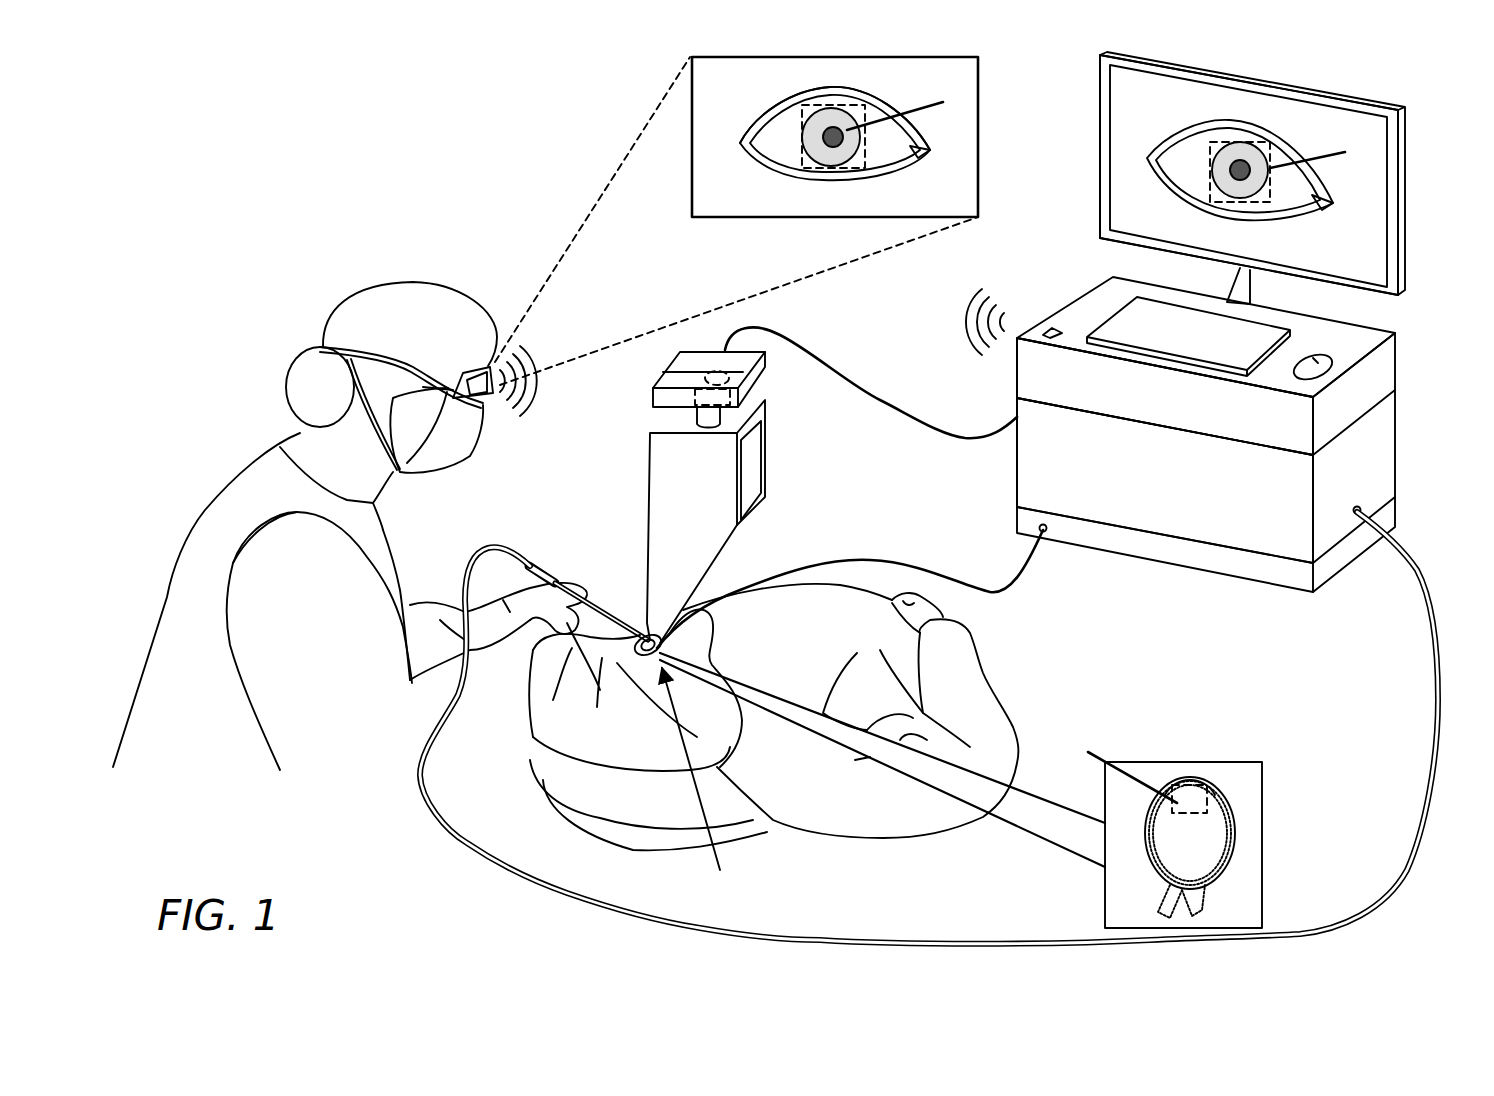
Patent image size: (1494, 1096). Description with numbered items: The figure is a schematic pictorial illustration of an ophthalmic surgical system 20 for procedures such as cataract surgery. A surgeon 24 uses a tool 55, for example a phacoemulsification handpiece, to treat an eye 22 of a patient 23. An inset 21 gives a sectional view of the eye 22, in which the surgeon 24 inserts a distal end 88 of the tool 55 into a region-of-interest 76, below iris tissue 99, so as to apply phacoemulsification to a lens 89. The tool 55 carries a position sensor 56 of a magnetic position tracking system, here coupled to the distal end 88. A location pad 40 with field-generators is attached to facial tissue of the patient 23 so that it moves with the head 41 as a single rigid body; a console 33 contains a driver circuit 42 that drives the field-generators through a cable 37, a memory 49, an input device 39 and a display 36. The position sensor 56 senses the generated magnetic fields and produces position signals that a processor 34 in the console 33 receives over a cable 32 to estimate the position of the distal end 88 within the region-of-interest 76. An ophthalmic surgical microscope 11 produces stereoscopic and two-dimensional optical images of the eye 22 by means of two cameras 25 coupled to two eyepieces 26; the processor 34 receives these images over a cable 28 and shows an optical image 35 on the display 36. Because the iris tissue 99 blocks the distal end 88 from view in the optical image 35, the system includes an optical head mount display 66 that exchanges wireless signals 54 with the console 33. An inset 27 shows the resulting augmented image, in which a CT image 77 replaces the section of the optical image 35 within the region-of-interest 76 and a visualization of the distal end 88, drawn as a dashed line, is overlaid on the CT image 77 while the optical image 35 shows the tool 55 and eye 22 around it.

The ophthalmic surgical system 20 is at (247, 177).
The ophthalmic surgical microscope 11 is at (755, 480).
The inset 21 is at (1137, 762).
The eye 22 is at (710, 125).
The patient 23 is at (790, 812).
The surgeon 24 is at (178, 563).
The cameras 25 is at (765, 380).
The eyepieces 26 is at (695, 420).
The inset 27 is at (692, 205).
The cable 28 is at (885, 400).
The cable 32 is at (473, 853).
The console 33 is at (1420, 115).
The processor 34 is at (1017, 468).
The optical image 35 is at (745, 214).
The display 36 is at (1100, 190).
The cable 37 is at (875, 560).
The input device 39 is at (1070, 273).
The location pad 40 is at (700, 783).
The head 41 is at (537, 717).
The driver circuit 42 is at (1017, 514).
The memory 49 is at (1017, 385).
The wireless signals 54 is at (538, 355).
The tool 55 is at (940, 103).
The position sensor 56 is at (857, 117).
The head mount display 66 is at (487, 365).
The region-of-interest 76 is at (805, 88).
The CT image 77 is at (795, 118).
The distal end 88 is at (848, 125).
The lens 89 is at (1195, 800).
The iris tissue 99 is at (830, 150).